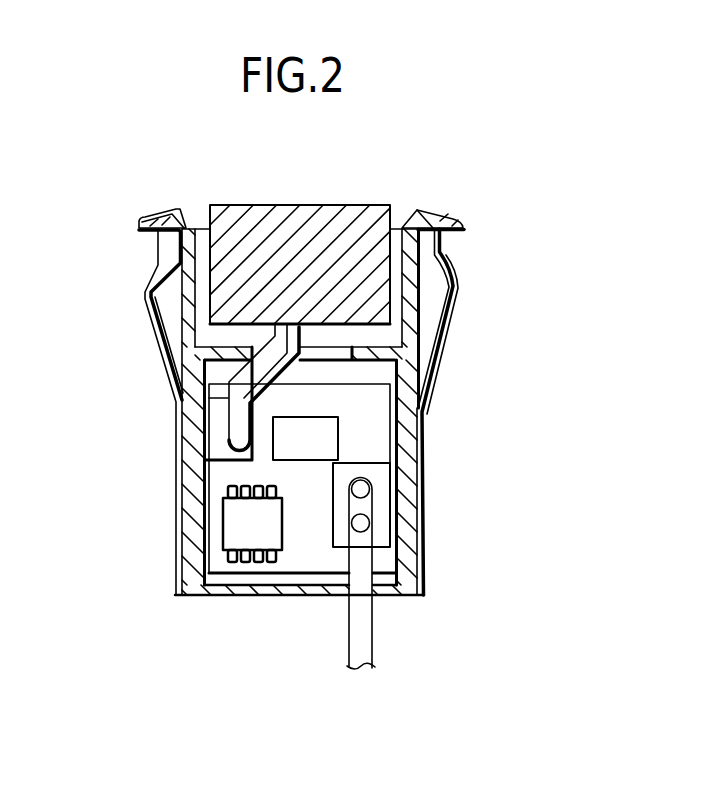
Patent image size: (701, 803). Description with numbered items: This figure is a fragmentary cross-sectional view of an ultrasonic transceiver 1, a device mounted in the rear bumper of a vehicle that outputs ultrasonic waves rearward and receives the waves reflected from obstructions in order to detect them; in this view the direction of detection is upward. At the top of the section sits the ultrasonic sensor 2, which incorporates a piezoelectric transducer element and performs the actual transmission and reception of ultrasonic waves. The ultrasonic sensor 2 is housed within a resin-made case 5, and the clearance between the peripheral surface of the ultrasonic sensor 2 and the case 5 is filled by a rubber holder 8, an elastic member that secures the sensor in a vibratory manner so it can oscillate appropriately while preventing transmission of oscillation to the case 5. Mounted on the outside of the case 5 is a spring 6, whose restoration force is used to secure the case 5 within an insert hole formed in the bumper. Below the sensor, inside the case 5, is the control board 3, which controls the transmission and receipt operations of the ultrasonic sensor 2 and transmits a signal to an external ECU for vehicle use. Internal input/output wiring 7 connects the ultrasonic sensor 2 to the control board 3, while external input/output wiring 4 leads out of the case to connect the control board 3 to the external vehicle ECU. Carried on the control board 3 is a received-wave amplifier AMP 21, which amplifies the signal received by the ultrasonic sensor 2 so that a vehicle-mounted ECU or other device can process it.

The ultrasonic transceiver 1 is at (492, 371).
The ultrasonic sensor 2 is at (377, 277).
The control board 3 is at (215, 452).
The external input/output wiring 4 is at (358, 625).
The resin-made case 5 is at (432, 215).
The spring 6 is at (150, 327).
The internal input/output wiring 7 is at (228, 394).
The rubber holder 8 is at (200, 280).
The received-wave amplifier AMP 21 is at (230, 528).